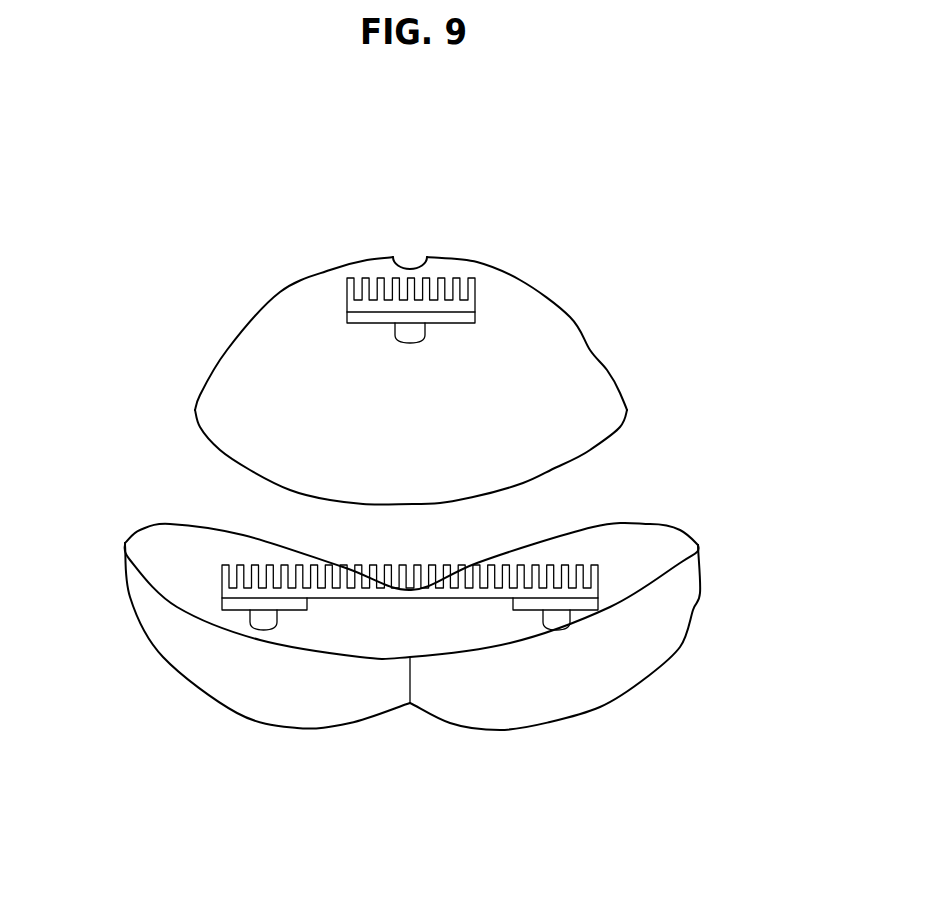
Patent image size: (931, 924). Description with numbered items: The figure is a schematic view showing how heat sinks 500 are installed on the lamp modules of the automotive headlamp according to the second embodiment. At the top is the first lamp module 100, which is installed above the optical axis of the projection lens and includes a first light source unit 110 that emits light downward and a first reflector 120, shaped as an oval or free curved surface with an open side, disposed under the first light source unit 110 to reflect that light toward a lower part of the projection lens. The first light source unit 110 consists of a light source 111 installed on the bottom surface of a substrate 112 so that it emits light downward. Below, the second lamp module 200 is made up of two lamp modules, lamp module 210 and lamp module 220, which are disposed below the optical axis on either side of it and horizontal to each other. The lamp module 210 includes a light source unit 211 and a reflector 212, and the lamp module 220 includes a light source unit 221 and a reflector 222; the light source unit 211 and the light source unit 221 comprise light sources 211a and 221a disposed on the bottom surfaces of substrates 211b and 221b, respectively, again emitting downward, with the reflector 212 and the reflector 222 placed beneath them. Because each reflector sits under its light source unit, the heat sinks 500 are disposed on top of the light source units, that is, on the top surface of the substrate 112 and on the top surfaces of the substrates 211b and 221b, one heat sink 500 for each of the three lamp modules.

The first lamp module 100 is at (557, 267).
The first light source unit 110 is at (348, 276).
The light source 111 is at (400, 340).
The substrate 112 is at (347, 317).
The first reflector 120 is at (478, 262).
The heat sink 500 is at (475, 303).
The second lamp module 200 is at (409, 694).
The lamp module 210 is at (555, 682).
The light source unit 211 is at (645, 662).
The light source 211a is at (557, 628).
The substrate 211b is at (605, 602).
The reflector 212 is at (553, 710).
The lamp module 220 is at (267, 682).
The light source unit 221 is at (173, 662).
The light source 221a is at (257, 630).
The substrate 221b is at (227, 605).
The reflector 222 is at (267, 710).